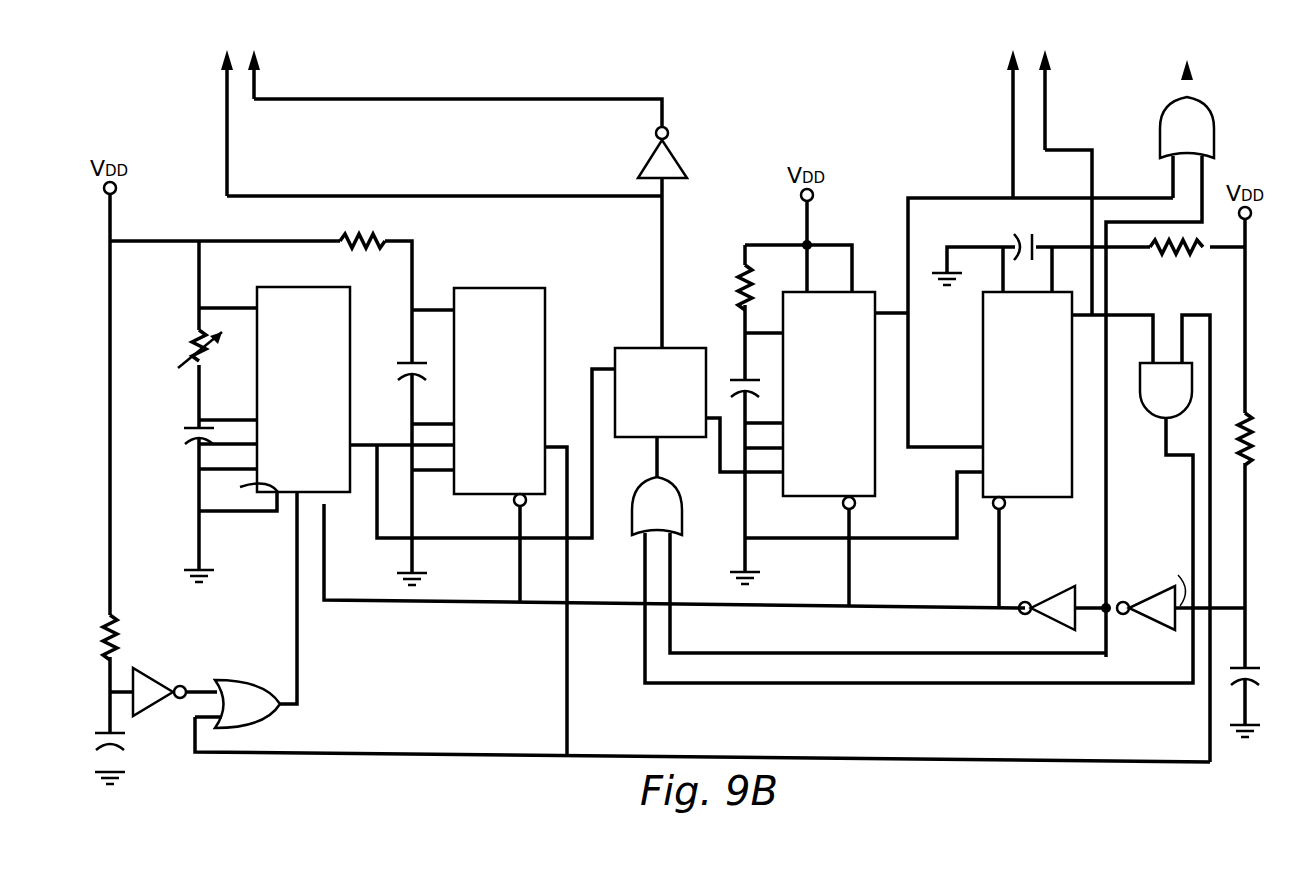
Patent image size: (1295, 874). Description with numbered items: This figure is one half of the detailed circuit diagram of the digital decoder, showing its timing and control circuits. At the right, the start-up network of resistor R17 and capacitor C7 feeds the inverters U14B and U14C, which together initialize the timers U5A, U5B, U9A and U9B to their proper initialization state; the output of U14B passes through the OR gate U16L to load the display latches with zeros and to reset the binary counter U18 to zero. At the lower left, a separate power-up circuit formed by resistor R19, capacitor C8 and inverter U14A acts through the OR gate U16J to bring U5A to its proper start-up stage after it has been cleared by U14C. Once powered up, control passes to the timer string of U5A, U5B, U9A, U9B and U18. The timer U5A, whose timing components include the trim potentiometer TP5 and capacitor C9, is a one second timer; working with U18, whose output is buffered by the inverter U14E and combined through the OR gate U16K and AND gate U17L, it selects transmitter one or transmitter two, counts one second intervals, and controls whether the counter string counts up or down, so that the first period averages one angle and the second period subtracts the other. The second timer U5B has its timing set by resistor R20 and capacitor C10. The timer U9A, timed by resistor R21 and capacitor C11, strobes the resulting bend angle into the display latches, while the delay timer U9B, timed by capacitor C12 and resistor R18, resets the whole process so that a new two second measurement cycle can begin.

The resistor R19 is at (84, 637).
The capacitor C8 is at (86, 744).
The inverter U14A is at (154, 681).
The OR gate U16J is at (255, 705).
The trim potentiometer TP5 is at (187, 349).
The capacitor C9 is at (180, 437).
The one second timer U5A is at (278, 393).
The resistor R20 is at (362, 255).
The capacitor C10 is at (397, 359).
The timer U5B is at (499, 397).
The inverter U14E is at (640, 162).
The binary counter U18 is at (661, 393).
The OR gate U16K is at (682, 508).
The resistor R21 is at (723, 287).
The capacitor C11 is at (735, 377).
The timer U9A is at (829, 400).
The capacitor C12 is at (1019, 234).
The resistor R18 is at (1176, 262).
The delay timer U9B is at (1027, 400).
The OR gate U16L is at (1206, 138).
The AND gate U17L is at (1154, 394).
The resistor R17 is at (1263, 439).
The capacitor C7 is at (1253, 663).
The inverter U14C is at (1043, 615).
The inverter U14B is at (1147, 606).